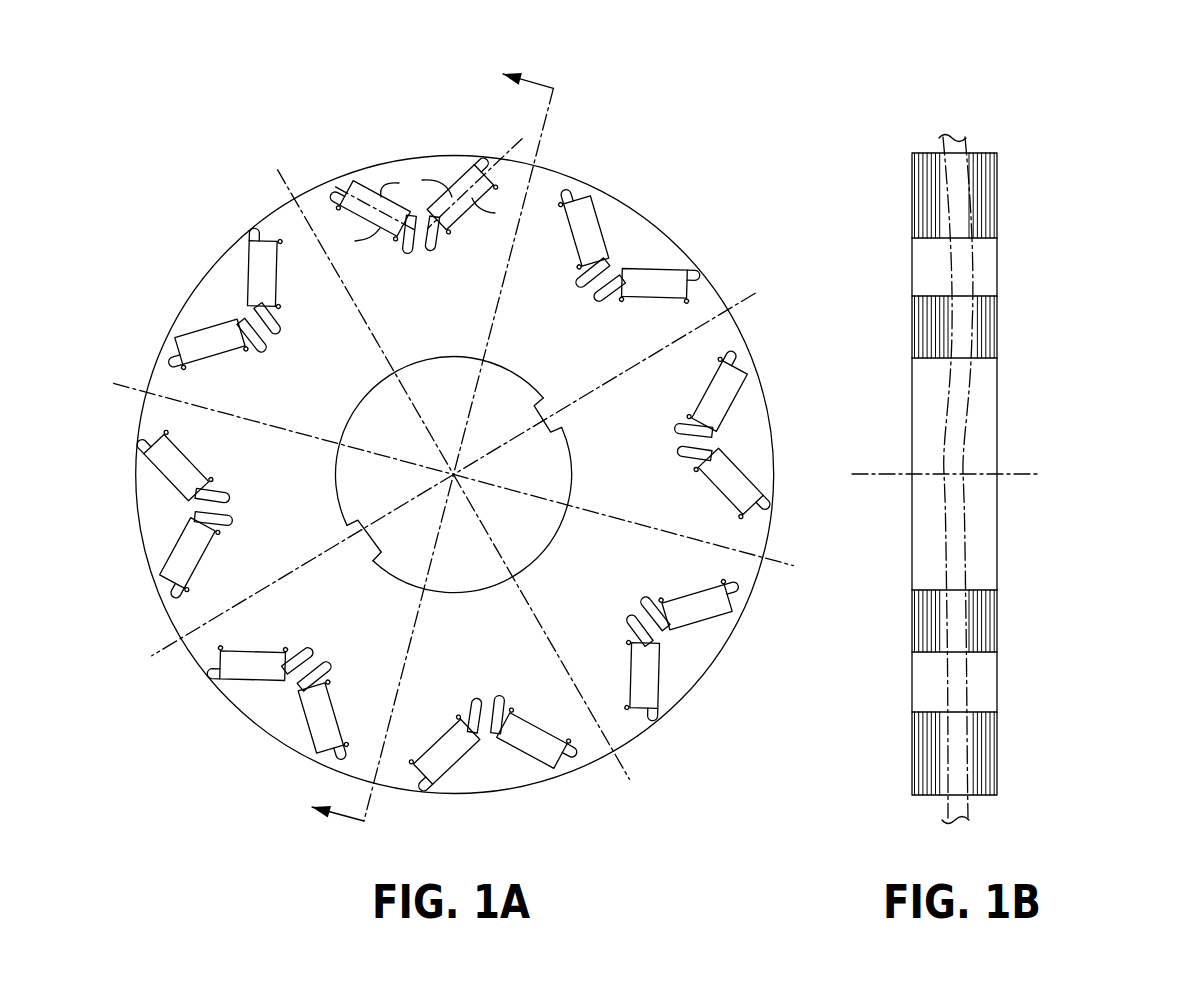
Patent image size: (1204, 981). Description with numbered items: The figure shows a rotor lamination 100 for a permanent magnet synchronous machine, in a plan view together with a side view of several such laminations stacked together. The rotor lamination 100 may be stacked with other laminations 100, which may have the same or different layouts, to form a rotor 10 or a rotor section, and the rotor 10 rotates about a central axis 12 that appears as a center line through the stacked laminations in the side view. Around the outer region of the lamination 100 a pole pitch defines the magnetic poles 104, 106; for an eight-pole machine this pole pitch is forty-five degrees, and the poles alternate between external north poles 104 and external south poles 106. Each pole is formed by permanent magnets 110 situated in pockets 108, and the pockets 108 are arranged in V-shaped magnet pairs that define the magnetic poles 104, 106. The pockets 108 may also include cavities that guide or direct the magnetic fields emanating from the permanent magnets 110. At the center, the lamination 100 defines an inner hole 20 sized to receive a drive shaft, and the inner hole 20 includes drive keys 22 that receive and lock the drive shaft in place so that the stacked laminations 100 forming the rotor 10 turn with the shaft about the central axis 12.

In FIG. 1B, the rotor 10 is at (1063, 196).
In FIG. 1B, the central axis 12 is at (1040, 472).
In FIG. 1A, the inner hole 20 is at (530, 553).
In FIG. 1A, the drive keys 22 is at (545, 430).
In FIG. 1A, the rotor lamination 100 is at (247, 85).
In FIG. 1B, the rotor lamination 100 is at (923, 152).
In FIG. 1A, the external north poles 104 is at (411, 157).
In FIG. 1A, the external south poles 106 is at (452, 446).
In FIG. 1A, the pockets 108 is at (343, 187).
In FIG. 1A, the permanent magnets 110 is at (368, 192).